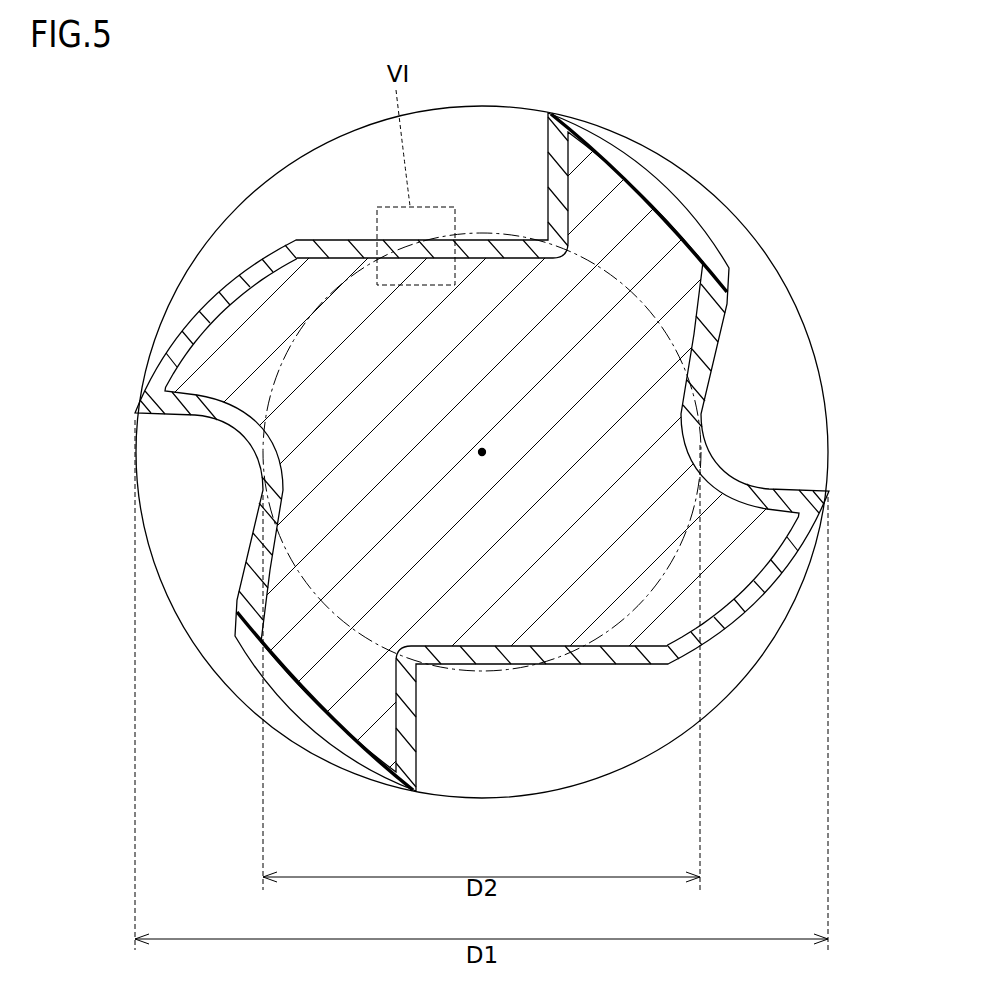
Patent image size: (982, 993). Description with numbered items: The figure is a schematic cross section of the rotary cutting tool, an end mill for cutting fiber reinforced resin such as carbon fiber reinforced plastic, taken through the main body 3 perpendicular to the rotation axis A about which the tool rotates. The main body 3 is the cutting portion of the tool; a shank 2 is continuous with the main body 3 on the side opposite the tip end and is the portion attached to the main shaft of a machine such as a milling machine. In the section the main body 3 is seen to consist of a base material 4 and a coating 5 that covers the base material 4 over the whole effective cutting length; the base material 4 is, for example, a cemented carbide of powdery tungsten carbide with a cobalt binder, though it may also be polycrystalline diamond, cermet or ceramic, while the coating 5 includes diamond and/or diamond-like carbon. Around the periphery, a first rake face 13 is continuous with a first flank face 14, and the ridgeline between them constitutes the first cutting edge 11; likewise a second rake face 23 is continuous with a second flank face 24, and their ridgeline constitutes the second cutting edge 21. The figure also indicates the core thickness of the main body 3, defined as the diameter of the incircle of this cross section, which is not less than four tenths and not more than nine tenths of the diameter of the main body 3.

The shank 2 is at (443, 106).
The main body 3 is at (232, 98).
The base material 4 is at (264, 343).
The coating 5 is at (343, 248).
The first cutting edge 11 is at (135, 413).
The first rake face 13 is at (172, 414).
The first flank face 14 is at (147, 388).
The second cutting edge 21 is at (551, 113).
The second rake face 23 is at (546, 172).
The second flank face 24 is at (582, 128).
The rotation axis A is at (488, 452).